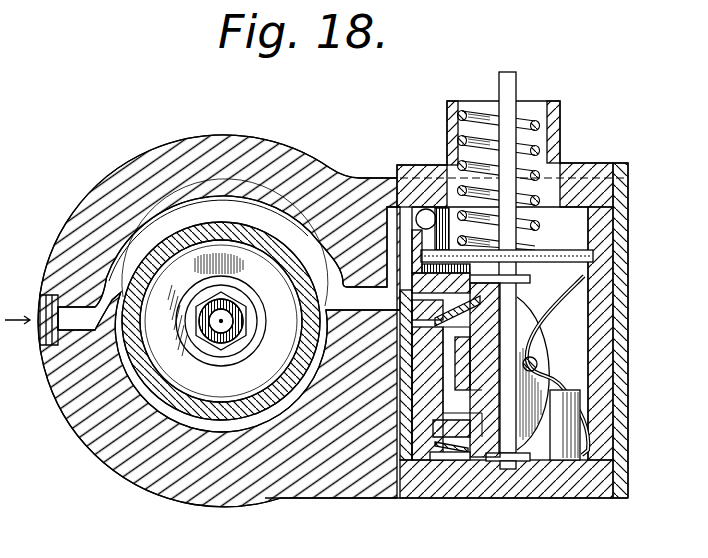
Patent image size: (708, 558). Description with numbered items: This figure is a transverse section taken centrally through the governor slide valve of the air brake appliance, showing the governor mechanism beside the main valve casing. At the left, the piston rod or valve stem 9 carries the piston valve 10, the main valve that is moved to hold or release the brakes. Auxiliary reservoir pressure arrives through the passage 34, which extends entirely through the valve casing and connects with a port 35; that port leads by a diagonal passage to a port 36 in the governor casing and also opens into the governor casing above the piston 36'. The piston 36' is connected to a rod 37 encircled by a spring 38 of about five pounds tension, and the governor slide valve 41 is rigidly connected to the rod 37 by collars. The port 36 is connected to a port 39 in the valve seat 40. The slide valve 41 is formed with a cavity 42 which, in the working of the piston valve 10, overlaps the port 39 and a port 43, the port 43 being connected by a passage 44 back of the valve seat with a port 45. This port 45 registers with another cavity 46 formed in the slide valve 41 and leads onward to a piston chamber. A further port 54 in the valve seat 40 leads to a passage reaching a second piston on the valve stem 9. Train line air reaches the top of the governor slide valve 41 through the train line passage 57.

The piston rod or valve stem 9 is at (226, 322).
The piston valve 10 is at (247, 341).
The passage 34 is at (252, 206).
The port 35 is at (423, 218).
The port 36 is at (387, 262).
The piston 36' is at (507, 249).
The rod 37 is at (512, 78).
The spring 38 is at (538, 150).
The port 39 is at (440, 322).
The valve seat 40 is at (460, 378).
The governor slide valve 41 is at (478, 363).
The cavity 42 is at (445, 320).
The port 43 is at (470, 325).
The passage 44 is at (445, 380).
The port 45 is at (435, 382).
The cavity 46 is at (496, 498).
The port 54 is at (470, 415).
The train line passage 57 is at (578, 497).